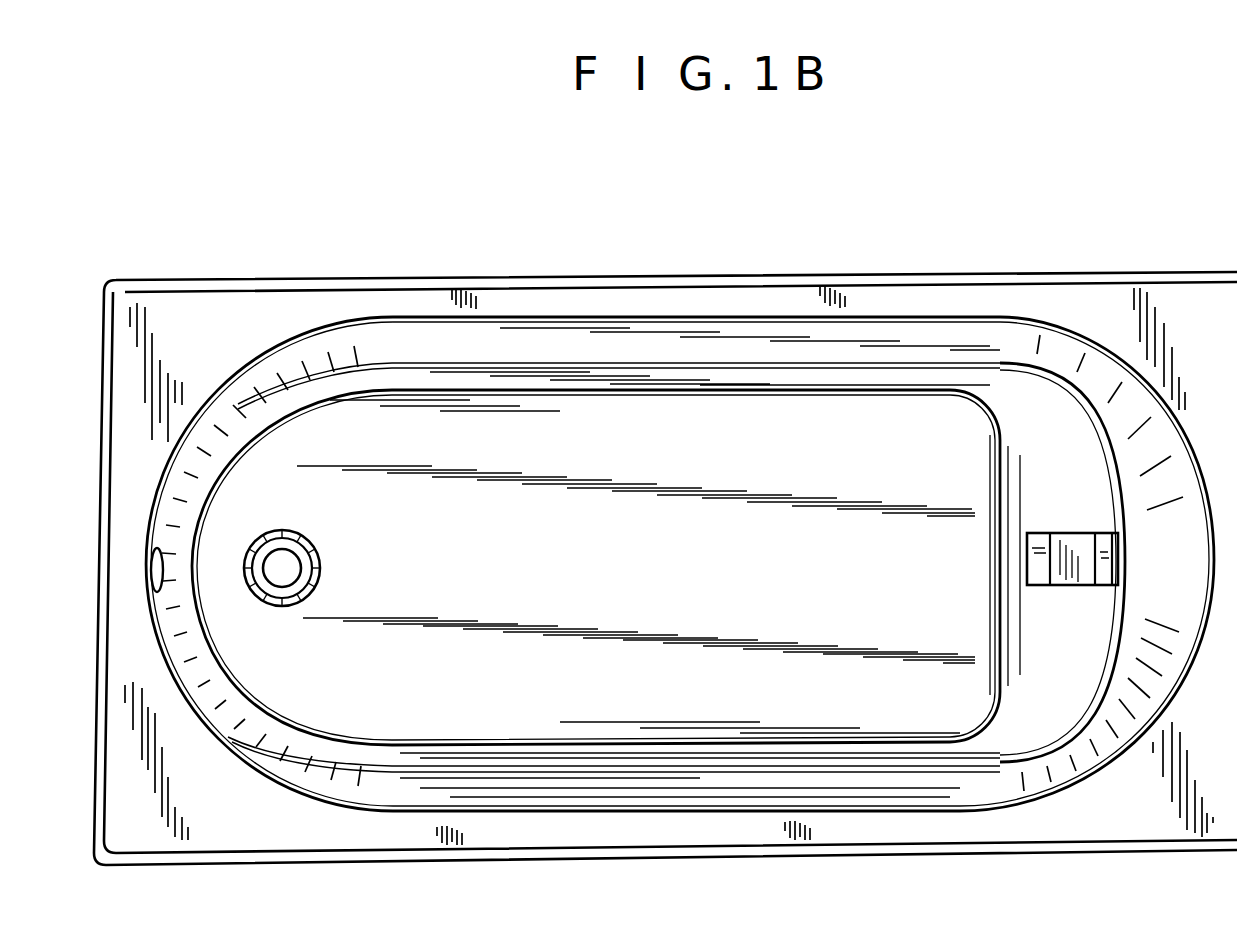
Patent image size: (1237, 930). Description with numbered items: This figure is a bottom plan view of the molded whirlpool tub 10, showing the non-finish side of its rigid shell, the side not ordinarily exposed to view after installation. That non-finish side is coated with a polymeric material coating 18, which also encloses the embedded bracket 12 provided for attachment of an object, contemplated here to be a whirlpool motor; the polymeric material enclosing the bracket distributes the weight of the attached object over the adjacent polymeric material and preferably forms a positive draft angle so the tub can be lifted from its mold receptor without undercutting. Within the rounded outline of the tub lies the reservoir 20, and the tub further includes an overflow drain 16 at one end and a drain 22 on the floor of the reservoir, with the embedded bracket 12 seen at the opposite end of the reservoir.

The molded tub 10 is at (292, 274).
The embedded bracket 12 is at (1037, 572).
The overflow drain 16 is at (150, 570).
The polymeric material coating 18 is at (1189, 306).
The reservoir 20 is at (680, 407).
The drain 22 is at (320, 565).